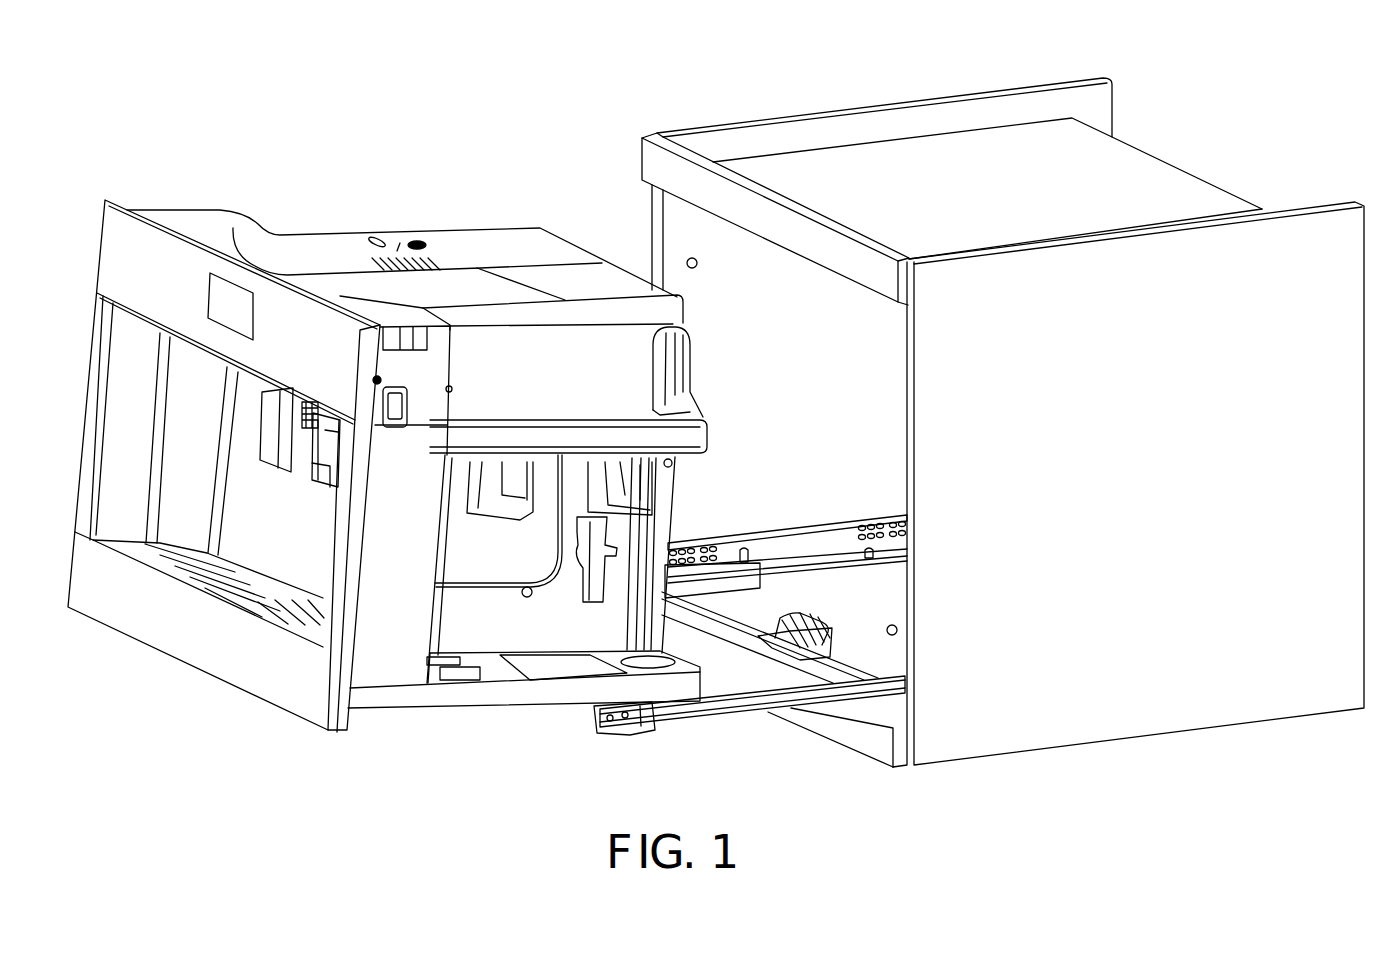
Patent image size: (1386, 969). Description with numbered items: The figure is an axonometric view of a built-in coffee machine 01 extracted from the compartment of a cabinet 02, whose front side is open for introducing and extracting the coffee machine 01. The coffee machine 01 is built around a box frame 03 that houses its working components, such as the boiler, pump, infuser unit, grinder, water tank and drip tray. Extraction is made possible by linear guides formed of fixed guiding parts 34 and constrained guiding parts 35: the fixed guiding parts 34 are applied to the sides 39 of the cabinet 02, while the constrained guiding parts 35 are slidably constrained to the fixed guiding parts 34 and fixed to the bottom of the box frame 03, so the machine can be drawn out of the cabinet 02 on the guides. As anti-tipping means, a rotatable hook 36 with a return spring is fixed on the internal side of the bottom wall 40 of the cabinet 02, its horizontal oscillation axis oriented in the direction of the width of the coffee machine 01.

The built-in coffee machine 01 is at (482, 207).
The cabinet 02 is at (1000, 73).
The box frame 03 is at (242, 205).
The fixed guiding parts 34 is at (794, 547).
The constrained guiding parts 35 is at (738, 706).
The rotatable hook 36 is at (825, 647).
The sides of the cabinet 39 is at (692, 263).
The bottom wall of the cabinet 40 is at (892, 630).